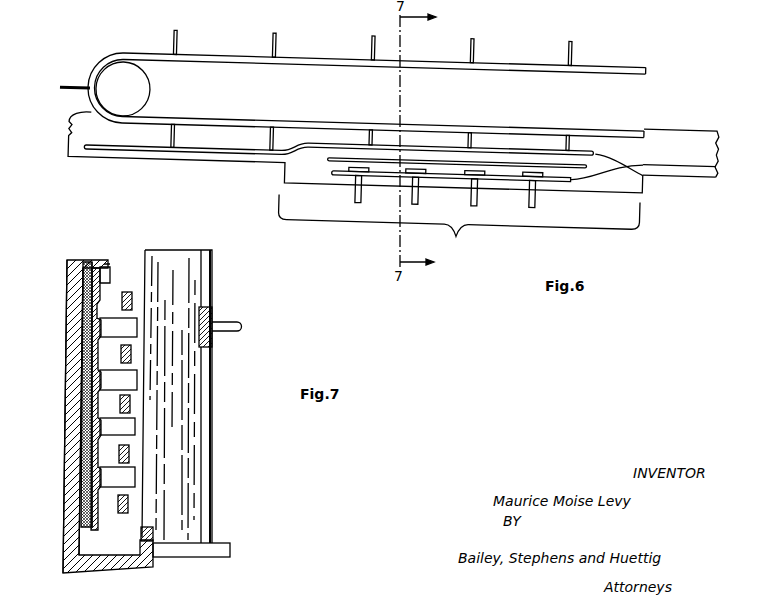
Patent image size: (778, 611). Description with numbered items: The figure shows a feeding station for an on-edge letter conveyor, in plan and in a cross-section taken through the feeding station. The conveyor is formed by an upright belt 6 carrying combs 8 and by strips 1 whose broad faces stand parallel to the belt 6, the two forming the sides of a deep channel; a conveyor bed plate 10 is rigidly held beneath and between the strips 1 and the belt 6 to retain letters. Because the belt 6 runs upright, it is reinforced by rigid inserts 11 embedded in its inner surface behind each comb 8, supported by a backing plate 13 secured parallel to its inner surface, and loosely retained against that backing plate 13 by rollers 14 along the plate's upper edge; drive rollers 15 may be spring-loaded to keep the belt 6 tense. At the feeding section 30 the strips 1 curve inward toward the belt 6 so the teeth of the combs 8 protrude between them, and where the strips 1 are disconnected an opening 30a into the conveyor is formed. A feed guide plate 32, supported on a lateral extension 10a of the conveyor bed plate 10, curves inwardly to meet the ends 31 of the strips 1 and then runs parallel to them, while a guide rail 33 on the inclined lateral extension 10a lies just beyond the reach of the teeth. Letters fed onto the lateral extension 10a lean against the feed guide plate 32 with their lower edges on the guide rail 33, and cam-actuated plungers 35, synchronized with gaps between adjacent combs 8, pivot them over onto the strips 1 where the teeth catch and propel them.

In FIG. 6, the strips 1 is at (418, 143).
In FIG. 7, the strips 1 is at (92, 403).
In FIG. 6, the belt 6 is at (293, 123).
In FIG. 7, the belt 6 is at (87, 300).
In FIG. 6, the combs 8 is at (177, 39).
In FIG. 7, the combs 8 is at (130, 477).
In FIG. 6, the conveyor bed plate 10 is at (82, 135).
In FIG. 7, the conveyor bed plate 10 is at (67, 547).
In FIG. 6, the lateral extension 10a is at (645, 174).
In FIG. 7, the lateral extension 10a is at (228, 544).
In FIG. 7, the rigid inserts 11 is at (83, 423).
In FIG. 7, the backing plate 13 is at (67, 337).
In FIG. 7, the rollers 14 is at (113, 277).
In FIG. 6, the drive rollers 15 is at (148, 95).
In FIG. 6, the feeding section 30 is at (459, 221).
In FIG. 6, the opening 30a is at (605, 170).
In FIG. 6, the ends of the strips 31 is at (640, 172).
In FIG. 6, the feed guide plate 32 is at (573, 178).
In FIG. 7, the feed guide plate 32 is at (208, 385).
In FIG. 6, the guide rail 33 is at (335, 160).
In FIG. 7, the guide rail 33 is at (153, 532).
In FIG. 6, the plungers 35 is at (533, 204).
In FIG. 7, the plungers 35 is at (236, 333).